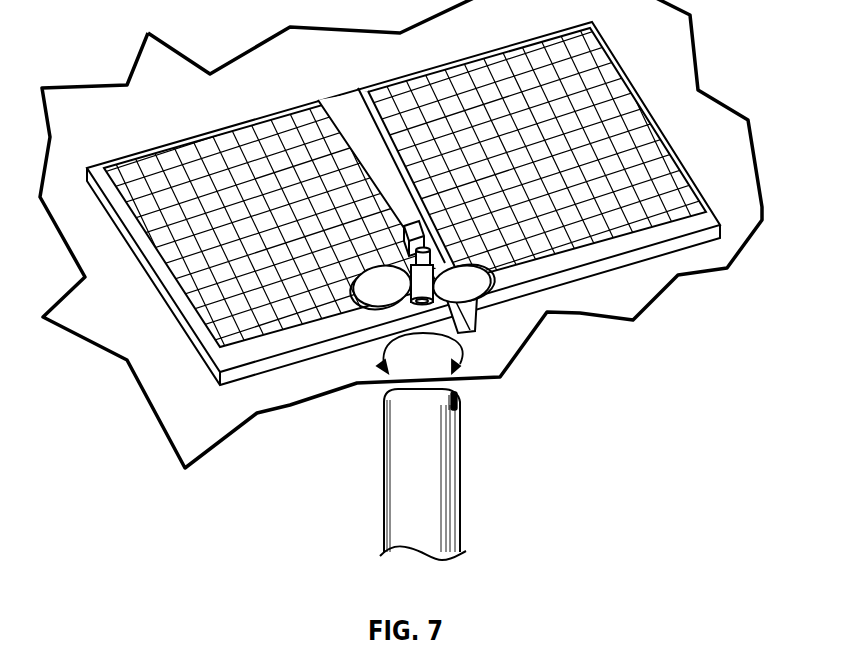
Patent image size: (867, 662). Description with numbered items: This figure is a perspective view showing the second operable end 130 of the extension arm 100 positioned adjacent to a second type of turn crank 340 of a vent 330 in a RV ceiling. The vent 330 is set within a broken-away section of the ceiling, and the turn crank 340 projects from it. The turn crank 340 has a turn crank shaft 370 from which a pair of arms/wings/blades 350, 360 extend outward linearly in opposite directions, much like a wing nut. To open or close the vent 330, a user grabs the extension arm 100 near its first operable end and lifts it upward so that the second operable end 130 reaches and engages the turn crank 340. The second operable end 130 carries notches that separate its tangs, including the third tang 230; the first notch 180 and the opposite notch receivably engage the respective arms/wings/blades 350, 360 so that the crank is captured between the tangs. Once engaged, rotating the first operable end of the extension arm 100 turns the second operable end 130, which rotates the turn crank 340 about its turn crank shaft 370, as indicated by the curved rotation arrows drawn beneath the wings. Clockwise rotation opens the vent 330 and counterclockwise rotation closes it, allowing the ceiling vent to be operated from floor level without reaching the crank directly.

The extension arm 100 is at (441, 479).
The second operable end 130 is at (480, 456).
The first notch 180 is at (453, 401).
The third tang 230 is at (410, 415).
The vent 330 is at (453, 293).
The turn crank 340 is at (398, 205).
The arm/wing/blade 350 is at (460, 293).
The arm/wing/blade 360 is at (377, 292).
The turn crank shaft 370 is at (513, 285).